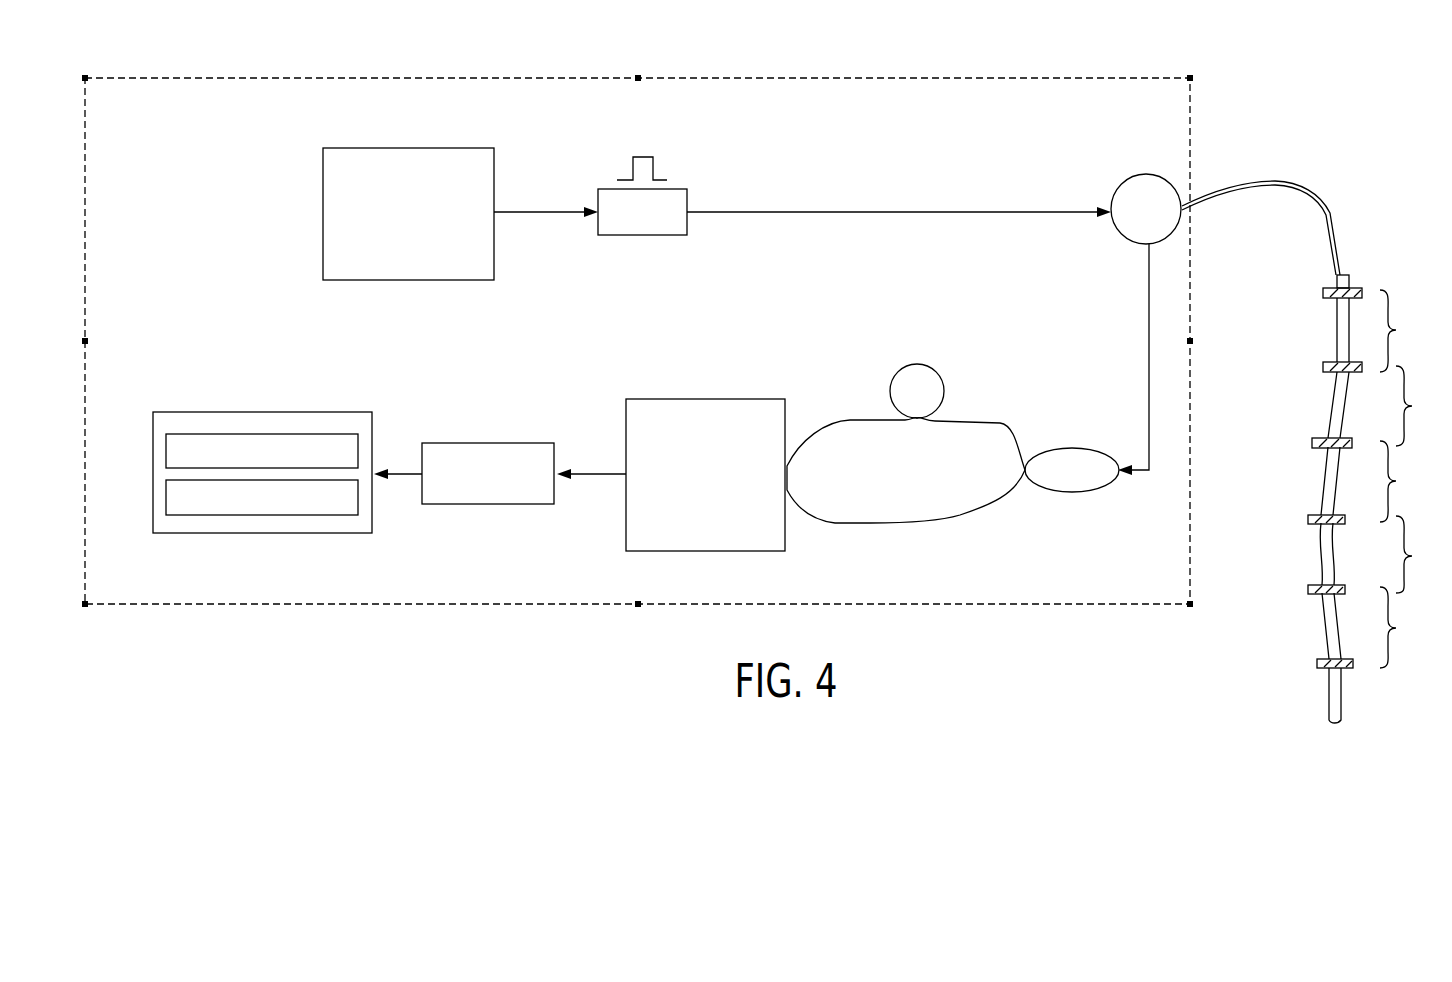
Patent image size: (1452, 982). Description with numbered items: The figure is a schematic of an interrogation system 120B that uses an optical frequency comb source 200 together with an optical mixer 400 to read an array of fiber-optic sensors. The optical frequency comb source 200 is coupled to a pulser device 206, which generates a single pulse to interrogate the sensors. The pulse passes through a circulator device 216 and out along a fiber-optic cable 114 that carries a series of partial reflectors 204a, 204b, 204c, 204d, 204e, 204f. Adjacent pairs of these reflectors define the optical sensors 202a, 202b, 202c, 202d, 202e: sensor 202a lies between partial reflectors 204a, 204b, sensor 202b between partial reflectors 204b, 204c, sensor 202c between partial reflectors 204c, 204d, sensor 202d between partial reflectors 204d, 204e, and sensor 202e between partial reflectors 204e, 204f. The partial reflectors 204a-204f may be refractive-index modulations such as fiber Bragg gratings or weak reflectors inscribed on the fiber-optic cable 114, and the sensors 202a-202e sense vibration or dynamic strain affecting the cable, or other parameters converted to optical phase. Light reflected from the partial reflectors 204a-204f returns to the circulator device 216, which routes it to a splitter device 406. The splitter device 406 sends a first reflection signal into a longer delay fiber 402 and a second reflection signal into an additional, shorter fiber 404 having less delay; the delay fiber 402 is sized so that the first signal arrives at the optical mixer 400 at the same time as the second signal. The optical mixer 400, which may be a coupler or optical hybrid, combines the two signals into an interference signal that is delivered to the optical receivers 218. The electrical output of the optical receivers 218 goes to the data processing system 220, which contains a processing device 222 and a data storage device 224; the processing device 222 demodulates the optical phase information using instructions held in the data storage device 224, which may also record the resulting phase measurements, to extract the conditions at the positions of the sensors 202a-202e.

The interrogation system 120B is at (1193, 118).
The optical frequency comb source 200 is at (375, 148).
The pulser device 206 is at (683, 189).
The circulator device 216 is at (1130, 177).
The fiber-optic cable 114 is at (1275, 184).
The partial reflector 204a is at (1308, 293).
The partial reflector 204b is at (1308, 367).
The partial reflector 204c is at (1297, 443).
The partial reflector 204d is at (1294, 519).
The partial reflector 204e is at (1294, 590).
The partial reflector 204f is at (1302, 664).
The optical sensor 202a is at (1410, 331).
The optical sensor 202b is at (1424, 406).
The optical sensor 202c is at (1409, 481).
The optical sensor 202d is at (1424, 554).
The optical sensor 202e is at (1409, 627).
The optical mixer 400 is at (688, 399).
The optical receivers 218 is at (465, 443).
The data processing system 220 is at (236, 508).
The processing device 222 is at (166, 450).
The data storage device 224 is at (166, 497).
The delay fiber 402 is at (986, 421).
The additional fiber 404 is at (925, 523).
The splitter device 406 is at (1084, 448).